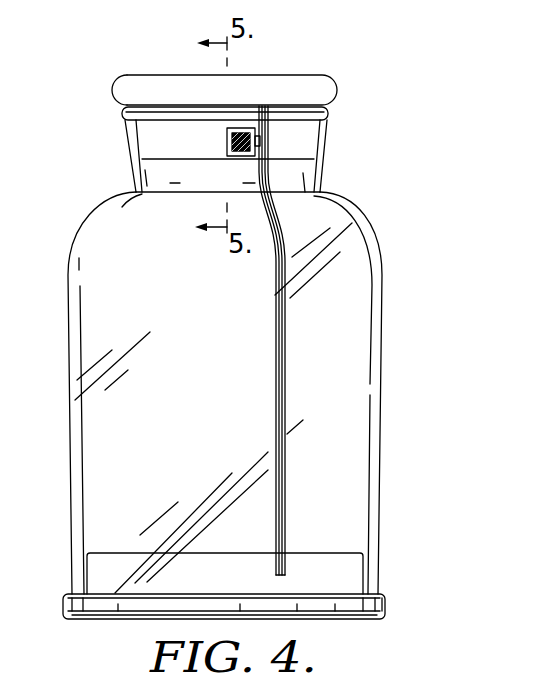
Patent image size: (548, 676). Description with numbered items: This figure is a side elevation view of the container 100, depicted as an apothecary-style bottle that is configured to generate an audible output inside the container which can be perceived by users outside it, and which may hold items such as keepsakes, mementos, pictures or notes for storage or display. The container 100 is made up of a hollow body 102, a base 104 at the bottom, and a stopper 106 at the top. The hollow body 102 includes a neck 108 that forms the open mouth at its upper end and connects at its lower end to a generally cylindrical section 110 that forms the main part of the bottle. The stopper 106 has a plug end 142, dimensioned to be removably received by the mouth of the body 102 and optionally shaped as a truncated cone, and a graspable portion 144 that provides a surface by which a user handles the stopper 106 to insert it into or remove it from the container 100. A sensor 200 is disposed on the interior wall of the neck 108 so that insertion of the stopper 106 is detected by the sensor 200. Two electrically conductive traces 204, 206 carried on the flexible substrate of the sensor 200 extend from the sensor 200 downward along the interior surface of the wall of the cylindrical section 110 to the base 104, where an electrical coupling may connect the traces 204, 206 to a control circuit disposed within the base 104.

The container 100 is at (388, 157).
The hollow body 102 is at (370, 237).
The base 104 is at (383, 618).
The stopper 106 is at (325, 75).
The neck 108 is at (131, 153).
The generally cylindrical section 110 is at (383, 288).
The plug end 142 is at (131, 134).
The graspable portion 144 is at (113, 94).
The sensor 200 is at (227, 141).
The electrically conductive trace 204 is at (309, 340).
The electrically conductive trace 206 is at (285, 346).